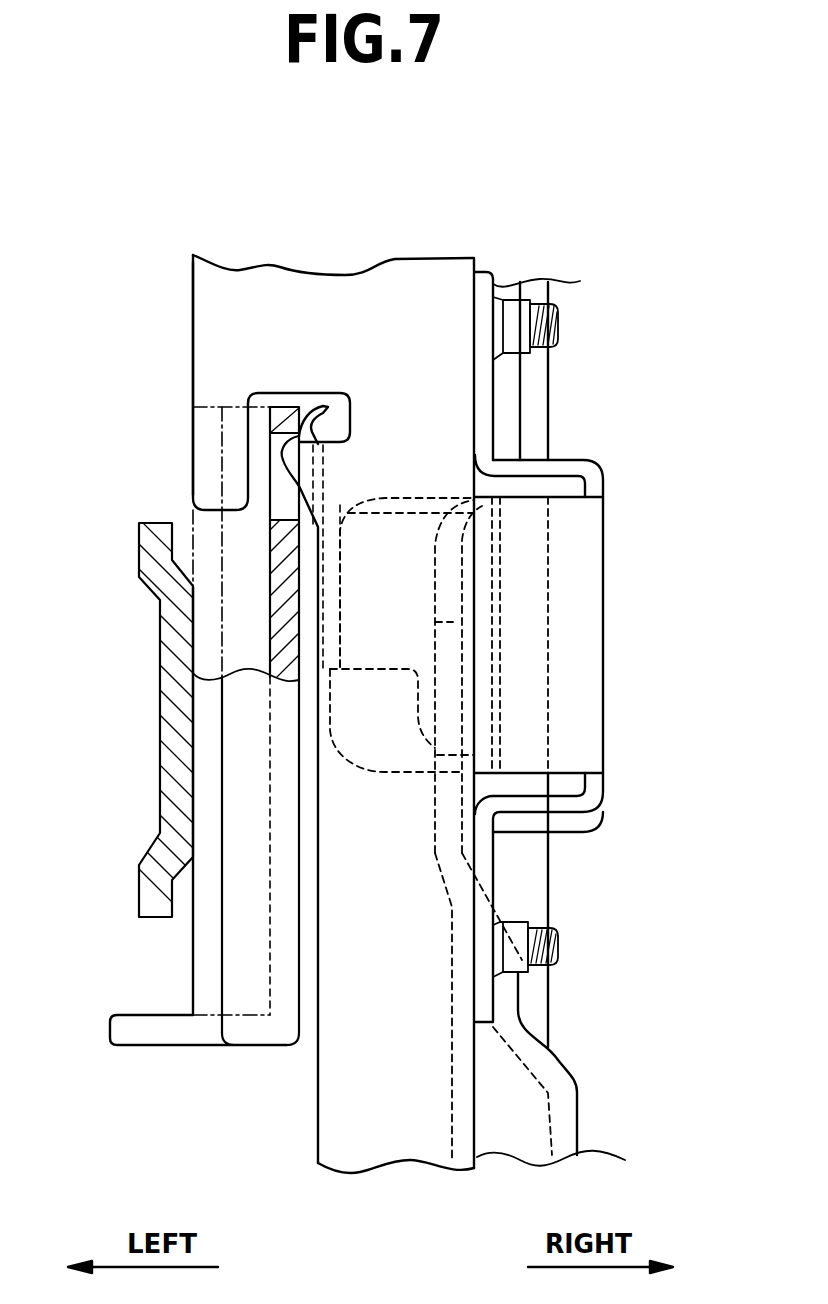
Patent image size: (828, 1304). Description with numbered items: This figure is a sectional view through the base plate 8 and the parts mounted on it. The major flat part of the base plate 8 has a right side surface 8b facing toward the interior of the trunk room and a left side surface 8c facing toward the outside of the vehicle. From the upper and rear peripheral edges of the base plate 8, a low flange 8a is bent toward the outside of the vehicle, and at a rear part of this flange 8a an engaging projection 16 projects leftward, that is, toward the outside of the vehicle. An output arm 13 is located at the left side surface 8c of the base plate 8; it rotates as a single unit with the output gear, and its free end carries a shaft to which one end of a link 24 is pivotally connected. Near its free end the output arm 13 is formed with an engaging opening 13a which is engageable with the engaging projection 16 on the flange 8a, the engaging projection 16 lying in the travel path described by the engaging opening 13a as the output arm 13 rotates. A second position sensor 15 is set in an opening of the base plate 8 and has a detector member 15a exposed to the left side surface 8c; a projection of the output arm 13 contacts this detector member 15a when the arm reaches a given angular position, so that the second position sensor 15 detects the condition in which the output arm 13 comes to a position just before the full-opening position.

The base plate 8 is at (192, 292).
The flange 8a is at (247, 355).
The right side surface 8b is at (477, 1113).
The left side surface 8c is at (452, 1060).
The output arm 13 is at (193, 963).
The engaging opening 13a is at (287, 520).
The second position sensor 15 is at (383, 494).
The detector member 15a is at (313, 425).
The engaging projection 16 is at (292, 461).
The link 24 is at (162, 752).